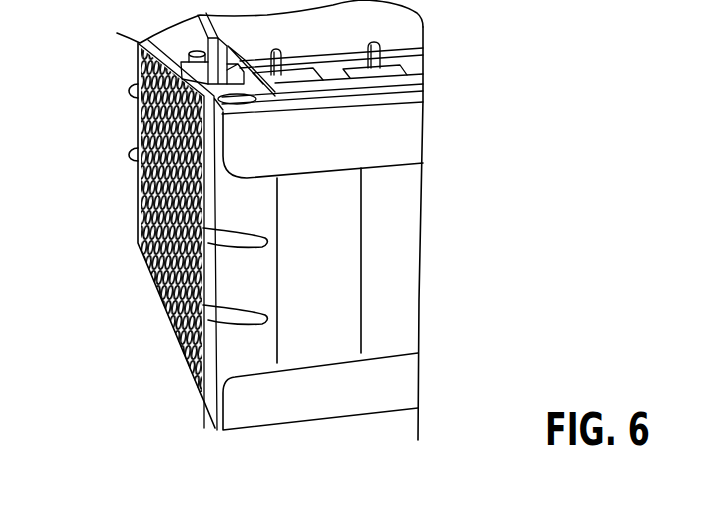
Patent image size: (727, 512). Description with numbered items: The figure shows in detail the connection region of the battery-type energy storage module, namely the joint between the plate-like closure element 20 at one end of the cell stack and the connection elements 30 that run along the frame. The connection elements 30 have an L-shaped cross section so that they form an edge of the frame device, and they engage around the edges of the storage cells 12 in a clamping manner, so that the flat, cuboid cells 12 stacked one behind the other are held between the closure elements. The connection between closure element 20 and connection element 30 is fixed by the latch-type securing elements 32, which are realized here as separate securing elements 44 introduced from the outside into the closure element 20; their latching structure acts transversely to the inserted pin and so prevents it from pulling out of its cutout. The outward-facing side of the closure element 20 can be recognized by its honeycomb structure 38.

The storage cells 12 is at (340, 249).
The plate-like closure element 20 is at (138, 202).
The connection element 30 is at (404, 127).
The latch-type securing element 32 is at (247, 253).
The separate securing element 44 is at (250, 330).
The structure 38 is at (130, 278).